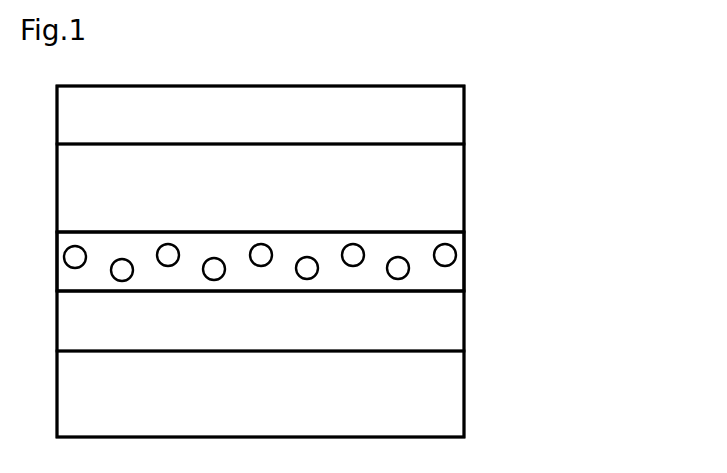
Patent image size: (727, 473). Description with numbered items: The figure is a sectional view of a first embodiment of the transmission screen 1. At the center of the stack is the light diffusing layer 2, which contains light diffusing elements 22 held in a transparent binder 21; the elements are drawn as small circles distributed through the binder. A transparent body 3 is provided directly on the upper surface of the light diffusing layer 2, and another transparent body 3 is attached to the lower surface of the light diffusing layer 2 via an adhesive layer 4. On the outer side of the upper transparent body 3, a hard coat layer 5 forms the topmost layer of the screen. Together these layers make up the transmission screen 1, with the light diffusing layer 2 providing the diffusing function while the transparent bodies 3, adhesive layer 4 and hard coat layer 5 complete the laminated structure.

The transmission screen 1 is at (578, 85).
The light diffusing layer 2 is at (555, 213).
The transparent body 3 is at (464, 173).
The adhesive layer 4 is at (464, 322).
The hard coat layer 5 is at (464, 114).
The transparent binder 21 is at (450, 275).
The light diffusing elements 22 is at (453, 255).